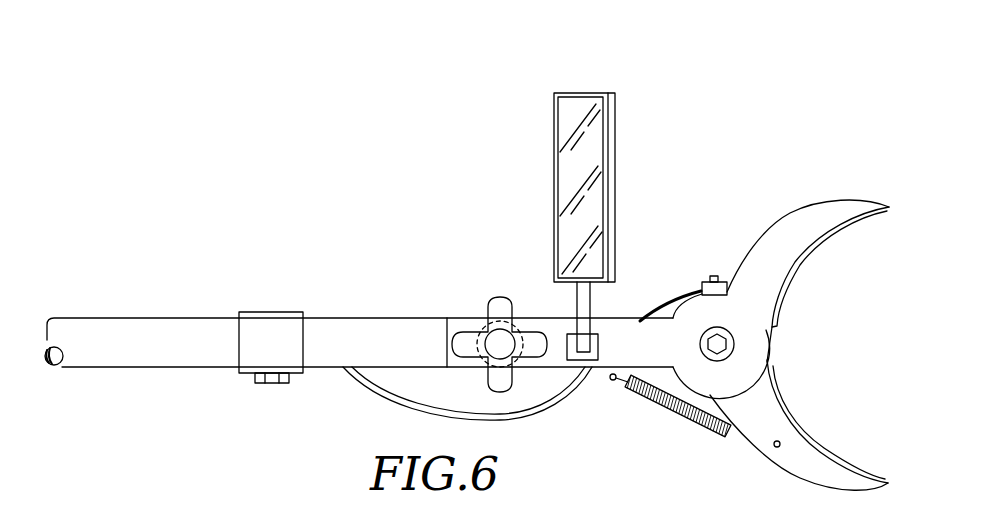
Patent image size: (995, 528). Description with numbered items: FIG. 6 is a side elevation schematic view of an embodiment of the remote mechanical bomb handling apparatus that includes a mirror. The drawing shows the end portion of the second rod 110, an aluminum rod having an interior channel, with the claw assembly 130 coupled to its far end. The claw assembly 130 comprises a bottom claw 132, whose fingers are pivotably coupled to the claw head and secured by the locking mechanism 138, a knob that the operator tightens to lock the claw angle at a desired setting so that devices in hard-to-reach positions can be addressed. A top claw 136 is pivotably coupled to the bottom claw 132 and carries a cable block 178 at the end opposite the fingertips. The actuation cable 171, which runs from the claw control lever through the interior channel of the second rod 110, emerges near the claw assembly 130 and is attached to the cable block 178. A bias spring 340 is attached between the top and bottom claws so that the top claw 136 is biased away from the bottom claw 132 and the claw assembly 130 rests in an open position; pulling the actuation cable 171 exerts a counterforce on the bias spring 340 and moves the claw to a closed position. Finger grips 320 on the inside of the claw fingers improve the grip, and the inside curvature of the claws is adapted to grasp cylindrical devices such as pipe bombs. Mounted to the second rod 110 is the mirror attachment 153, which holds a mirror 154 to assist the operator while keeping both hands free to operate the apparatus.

The second rod 110 is at (340, 318).
The claw assembly 130 is at (667, 262).
The bottom claw 132 is at (800, 209).
The top claw 136 is at (790, 478).
The locking mechanism 138 is at (502, 297).
The mirror attachment 153 is at (584, 367).
The mirror 154 is at (590, 93).
The actuation cable 171 is at (524, 419).
The cable block 178 is at (725, 282).
The finger grips 320 is at (800, 268).
The bias spring 340 is at (683, 418).